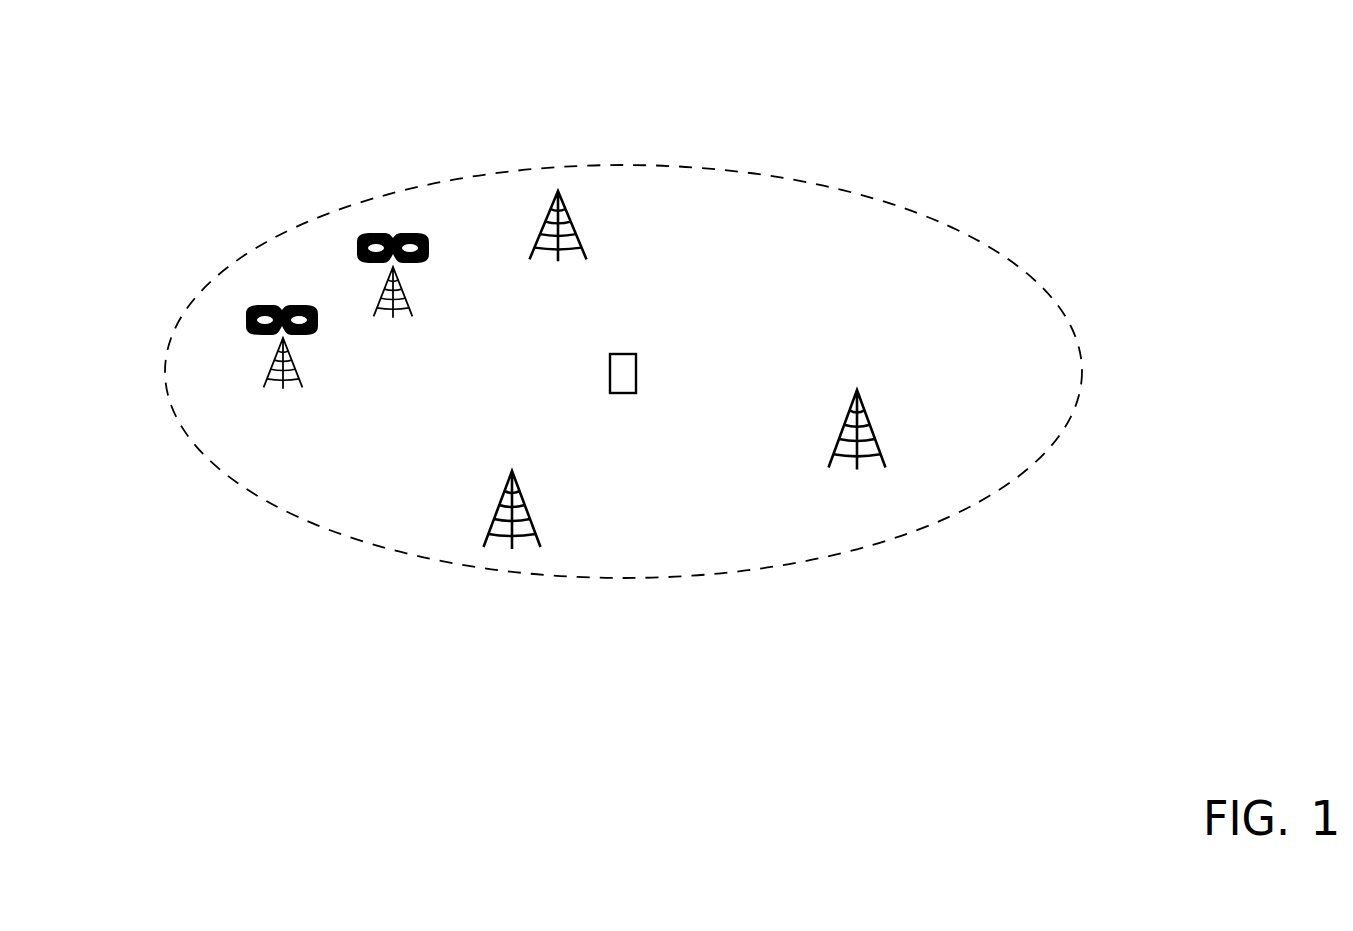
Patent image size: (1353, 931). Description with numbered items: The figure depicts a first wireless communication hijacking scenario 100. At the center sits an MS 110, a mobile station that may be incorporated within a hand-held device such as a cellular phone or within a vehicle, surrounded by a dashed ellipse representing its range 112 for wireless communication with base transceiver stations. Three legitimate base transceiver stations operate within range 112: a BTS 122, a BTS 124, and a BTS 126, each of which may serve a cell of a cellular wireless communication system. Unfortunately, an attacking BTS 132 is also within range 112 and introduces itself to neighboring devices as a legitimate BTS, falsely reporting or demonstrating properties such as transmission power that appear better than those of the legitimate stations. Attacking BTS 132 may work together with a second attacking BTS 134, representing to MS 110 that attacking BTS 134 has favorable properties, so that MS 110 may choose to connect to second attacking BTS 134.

The first wireless communication hijacking scenario 100 is at (104, 75).
The MS 110 is at (626, 412).
The range 112 is at (460, 160).
The BTS 122 is at (494, 554).
The BTS 124 is at (867, 340).
The BTS 126 is at (565, 138).
The attacking BTS 132 is at (319, 246).
The second attacking BTS 134 is at (208, 341).